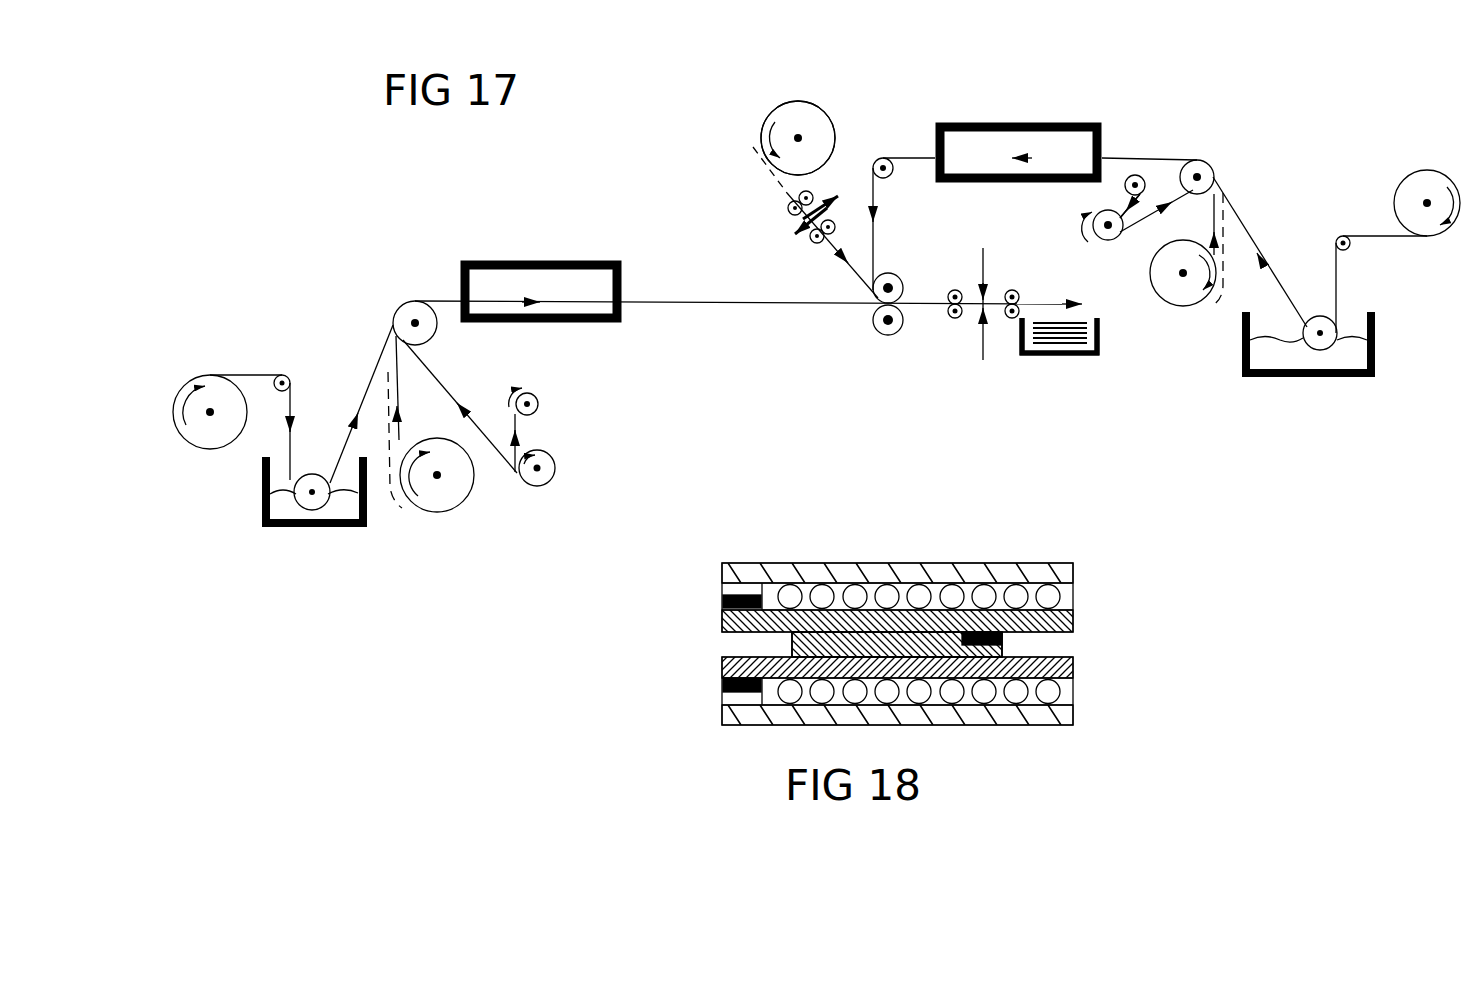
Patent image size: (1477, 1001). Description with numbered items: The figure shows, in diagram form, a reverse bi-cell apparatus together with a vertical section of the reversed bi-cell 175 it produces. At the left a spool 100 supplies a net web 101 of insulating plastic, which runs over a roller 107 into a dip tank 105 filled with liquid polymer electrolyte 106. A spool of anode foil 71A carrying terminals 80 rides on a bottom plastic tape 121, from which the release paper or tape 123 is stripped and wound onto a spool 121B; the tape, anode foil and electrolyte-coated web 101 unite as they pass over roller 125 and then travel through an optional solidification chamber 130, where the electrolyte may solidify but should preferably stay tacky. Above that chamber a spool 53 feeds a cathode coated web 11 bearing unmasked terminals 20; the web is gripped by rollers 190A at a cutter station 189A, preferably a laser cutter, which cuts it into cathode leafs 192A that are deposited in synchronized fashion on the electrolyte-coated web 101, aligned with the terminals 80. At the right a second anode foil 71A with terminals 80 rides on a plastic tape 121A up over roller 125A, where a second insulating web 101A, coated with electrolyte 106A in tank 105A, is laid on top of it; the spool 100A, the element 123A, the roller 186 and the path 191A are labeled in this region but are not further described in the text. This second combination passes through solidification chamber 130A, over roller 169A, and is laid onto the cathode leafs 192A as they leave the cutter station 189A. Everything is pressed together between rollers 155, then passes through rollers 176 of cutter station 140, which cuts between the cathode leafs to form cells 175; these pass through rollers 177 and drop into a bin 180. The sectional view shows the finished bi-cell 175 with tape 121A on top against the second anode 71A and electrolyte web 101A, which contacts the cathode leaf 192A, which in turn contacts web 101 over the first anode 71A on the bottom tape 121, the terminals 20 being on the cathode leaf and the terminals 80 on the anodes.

In FIG. 17, the cathode coated web 11 is at (826, 172).
In FIG. 17, the unmasked terminals 20 is at (755, 153).
In FIG. 18, the unmasked terminals 20 is at (1003, 640).
In FIG. 17, the spool 53 is at (772, 120).
In FIG. 17, the anode foil 71A is at (402, 433).
In FIG. 18, the anode foil 71A is at (1073, 597).
In FIG. 17, the terminals 80 is at (385, 372).
In FIG. 18, the terminals 80 is at (722, 600).
In FIG. 17, the spool 100 is at (185, 378).
In FIG. 17, the supply roll 100A is at (1405, 190).
In FIG. 17, the net web of insulating plastic 101 is at (246, 372).
In FIG. 18, the net web of insulating plastic 101 is at (1073, 665).
In FIG. 17, the web of insulating plastic 101A is at (1250, 215).
In FIG. 18, the web of insulating plastic 101A is at (1073, 620).
In FIG. 17, the dip tank 105 is at (260, 473).
In FIG. 17, the tank 105A is at (1325, 380).
In FIG. 17, the polymer electrolyte 106 is at (345, 508).
In FIG. 17, the electrolyte 106A is at (1355, 350).
In FIG. 17, the roller 107 is at (307, 508).
In FIG. 17, the bottom plastic tape 121 is at (555, 471).
In FIG. 18, the bottom plastic tape 121 is at (1012, 715).
In FIG. 17, the plastic tape 121A is at (1116, 240).
In FIG. 18, the plastic tape 121A is at (940, 573).
In FIG. 17, the spool 121B is at (538, 393).
In FIG. 17, the release paper or tape 123 is at (520, 440).
In FIG. 17, the cover layer feed path 123A is at (1150, 197).
In FIG. 17, the roller 125 is at (408, 318).
In FIG. 17, the roller 125A is at (1207, 165).
In FIG. 17, the solidification chamber 130 is at (490, 260).
In FIG. 17, the solidification chamber 130A is at (975, 122).
In FIG. 17, the cutter station 140 is at (958, 247).
In FIG. 17, the rollers 155 is at (875, 328).
In FIG. 17, the roller 169A is at (878, 157).
In FIG. 17, the cells 175 is at (1060, 357).
In FIG. 18, the cells 175 is at (852, 543).
In FIG. 17, the rollers 176 is at (950, 320).
In FIG. 17, the rollers 177 is at (1010, 320).
In FIG. 17, the bin 180 is at (1093, 355).
In FIG. 17, the guide roller 186 is at (1134, 174).
In FIG. 17, the cutter station 189A is at (787, 242).
In FIG. 17, the rollers 190A is at (788, 205).
In FIG. 17, the web path 191A is at (873, 240).
In FIG. 17, the cathode leafs 192A is at (867, 287).
In FIG. 18, the cathode leafs 192A is at (790, 645).